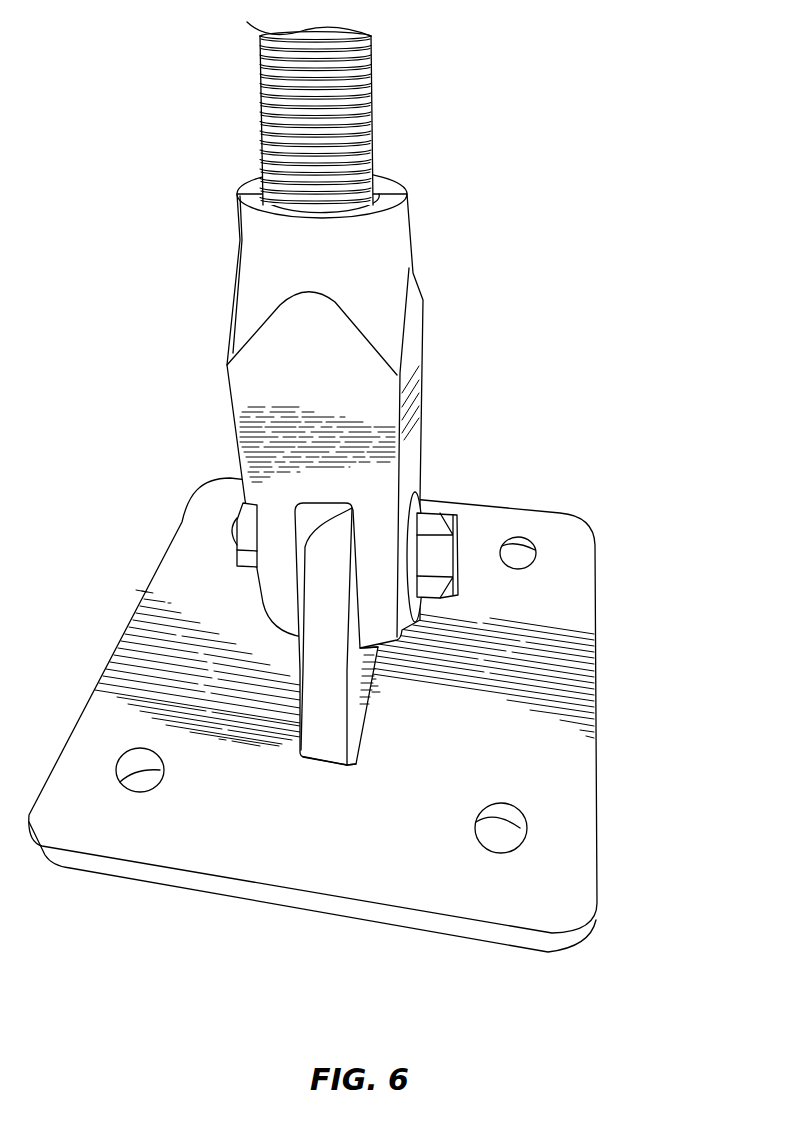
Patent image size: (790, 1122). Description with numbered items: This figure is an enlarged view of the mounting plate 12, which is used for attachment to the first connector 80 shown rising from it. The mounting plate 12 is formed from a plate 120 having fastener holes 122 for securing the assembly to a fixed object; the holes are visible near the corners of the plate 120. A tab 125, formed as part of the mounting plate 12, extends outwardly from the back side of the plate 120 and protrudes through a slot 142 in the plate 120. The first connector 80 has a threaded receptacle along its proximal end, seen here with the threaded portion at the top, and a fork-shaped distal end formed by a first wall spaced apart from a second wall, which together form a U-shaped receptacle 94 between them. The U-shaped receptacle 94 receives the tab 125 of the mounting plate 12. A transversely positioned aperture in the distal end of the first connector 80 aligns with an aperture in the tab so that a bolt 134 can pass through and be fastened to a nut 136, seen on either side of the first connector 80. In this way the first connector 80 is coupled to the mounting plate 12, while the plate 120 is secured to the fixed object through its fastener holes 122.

The mounting plate 12 is at (567, 468).
The first connector 80 is at (423, 305).
The U-shaped receptacle 94 is at (353, 517).
The plate 120 is at (598, 711).
The fastener holes 122 is at (528, 820).
The tab 125 is at (355, 687).
The bolt 134 is at (230, 524).
The nut 136 is at (487, 562).
The slot 142 is at (326, 753).